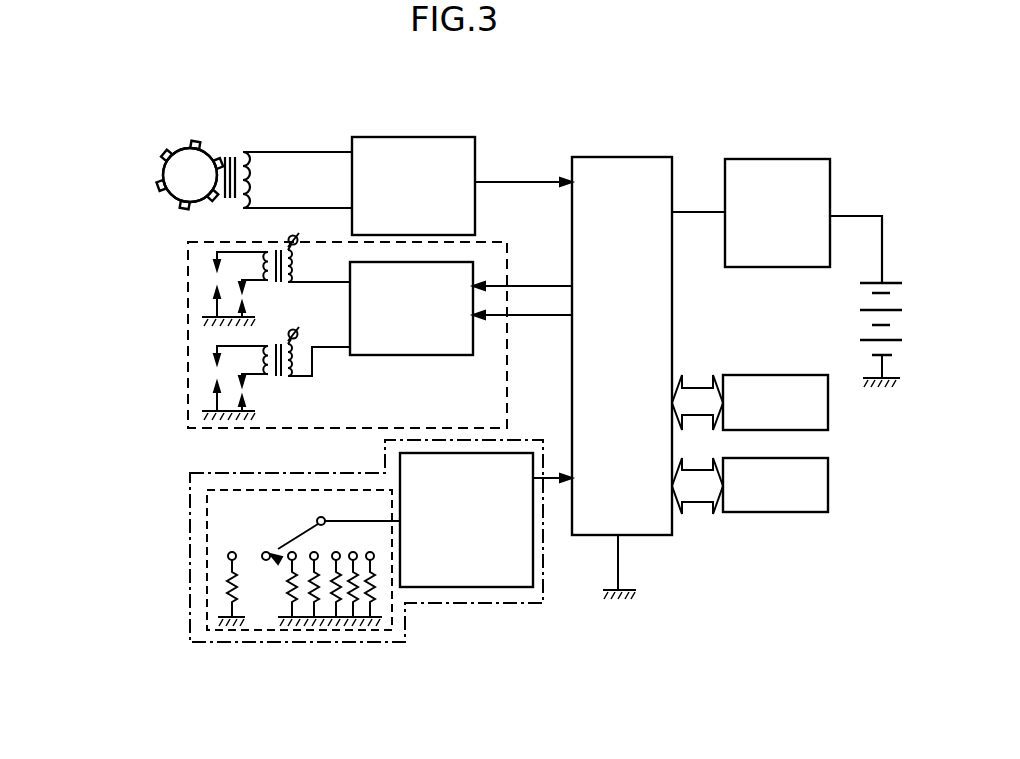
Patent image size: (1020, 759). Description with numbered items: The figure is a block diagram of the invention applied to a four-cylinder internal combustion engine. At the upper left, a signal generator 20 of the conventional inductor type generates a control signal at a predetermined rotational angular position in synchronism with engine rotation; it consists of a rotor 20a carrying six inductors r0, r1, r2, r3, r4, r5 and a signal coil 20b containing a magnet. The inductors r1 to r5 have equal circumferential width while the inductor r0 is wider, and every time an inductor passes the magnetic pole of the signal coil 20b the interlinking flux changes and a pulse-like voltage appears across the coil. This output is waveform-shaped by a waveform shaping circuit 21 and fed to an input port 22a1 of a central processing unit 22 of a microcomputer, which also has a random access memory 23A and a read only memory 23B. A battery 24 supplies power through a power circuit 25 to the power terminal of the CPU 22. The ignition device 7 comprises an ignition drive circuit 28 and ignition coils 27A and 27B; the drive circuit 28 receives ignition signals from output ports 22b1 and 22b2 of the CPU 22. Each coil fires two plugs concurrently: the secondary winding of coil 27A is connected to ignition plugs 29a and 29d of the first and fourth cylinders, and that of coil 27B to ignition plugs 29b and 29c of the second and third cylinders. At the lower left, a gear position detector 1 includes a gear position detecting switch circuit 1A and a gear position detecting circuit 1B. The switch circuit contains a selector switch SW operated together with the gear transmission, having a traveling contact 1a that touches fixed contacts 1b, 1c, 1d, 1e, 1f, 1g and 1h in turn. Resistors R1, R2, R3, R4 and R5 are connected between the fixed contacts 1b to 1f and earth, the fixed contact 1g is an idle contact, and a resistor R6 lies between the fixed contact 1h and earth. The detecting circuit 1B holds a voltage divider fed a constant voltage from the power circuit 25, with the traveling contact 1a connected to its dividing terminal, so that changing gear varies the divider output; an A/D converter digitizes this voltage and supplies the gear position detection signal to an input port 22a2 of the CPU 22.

The signal generator 20 is at (164, 162).
The rotor 20a is at (146, 165).
The signal coil 20b is at (250, 168).
The inductor r0 is at (196, 146).
The inductor r1 is at (222, 160).
The inductor r2 is at (212, 199).
The inductor r3 is at (180, 206).
The inductor r4 is at (160, 186).
The inductor r5 is at (163, 150).
The waveform shaping circuit 21 is at (387, 137).
The central processing unit 22 is at (606, 157).
The input port 22a1 is at (541, 181).
The input port 22a2 is at (554, 482).
The output port 22b1 is at (547, 284).
The output port 22b2 is at (548, 317).
The ignition device 7 is at (483, 240).
The ignition drive circuit 28 is at (410, 356).
The ignition coil 27A is at (205, 284).
The ignition coil 27B is at (215, 403).
The ignition plug 29a is at (214, 284).
The ignition plug 29b is at (216, 378).
The ignition plug 29c is at (246, 392).
The ignition plug 29d is at (242, 297).
The power circuit 25 is at (768, 159).
The battery 24 is at (870, 284).
The read only memory 23B is at (777, 374).
The random access memory 23A is at (774, 513).
The gear position detector 1 is at (182, 535).
The gear position detecting switch circuit 1A is at (205, 598).
The gear position detecting circuit 1B is at (460, 600).
The selector switch SW is at (250, 529).
The traveling contact 1a is at (282, 532).
The fixed contact 1b is at (378, 565).
The fixed contact 1c is at (354, 550).
The fixed contact 1d is at (337, 550).
The fixed contact 1e is at (316, 520).
The fixed contact 1f is at (289, 567).
The fixed contact 1g is at (264, 562).
The fixed contact 1h is at (230, 560).
The resistor R1 is at (374, 562).
The resistor R2 is at (357, 604).
The resistor R3 is at (337, 604).
The resistor R4 is at (318, 604).
The resistor R5 is at (306, 603).
The resistor R6 is at (222, 600).